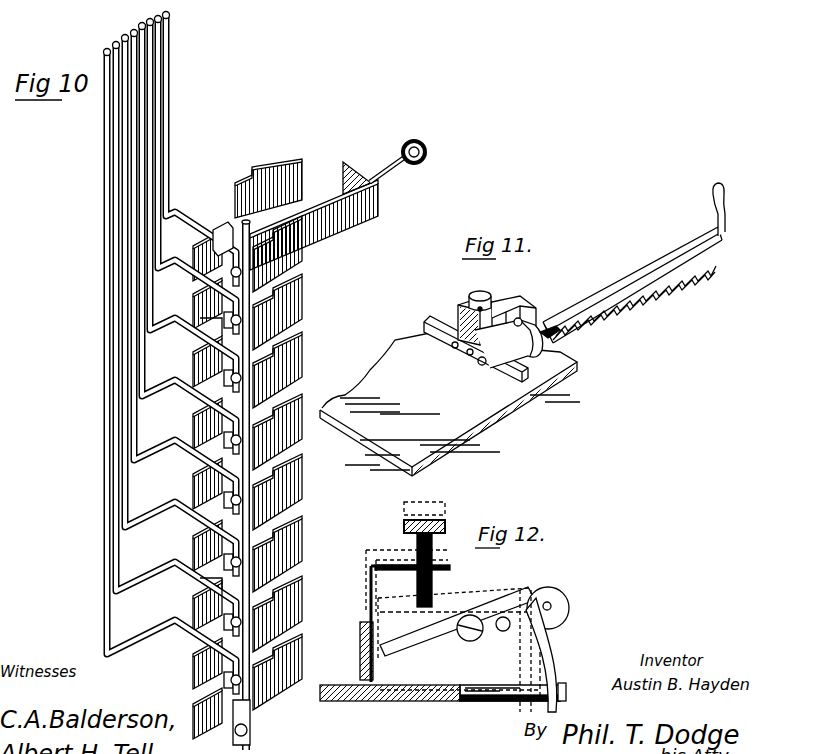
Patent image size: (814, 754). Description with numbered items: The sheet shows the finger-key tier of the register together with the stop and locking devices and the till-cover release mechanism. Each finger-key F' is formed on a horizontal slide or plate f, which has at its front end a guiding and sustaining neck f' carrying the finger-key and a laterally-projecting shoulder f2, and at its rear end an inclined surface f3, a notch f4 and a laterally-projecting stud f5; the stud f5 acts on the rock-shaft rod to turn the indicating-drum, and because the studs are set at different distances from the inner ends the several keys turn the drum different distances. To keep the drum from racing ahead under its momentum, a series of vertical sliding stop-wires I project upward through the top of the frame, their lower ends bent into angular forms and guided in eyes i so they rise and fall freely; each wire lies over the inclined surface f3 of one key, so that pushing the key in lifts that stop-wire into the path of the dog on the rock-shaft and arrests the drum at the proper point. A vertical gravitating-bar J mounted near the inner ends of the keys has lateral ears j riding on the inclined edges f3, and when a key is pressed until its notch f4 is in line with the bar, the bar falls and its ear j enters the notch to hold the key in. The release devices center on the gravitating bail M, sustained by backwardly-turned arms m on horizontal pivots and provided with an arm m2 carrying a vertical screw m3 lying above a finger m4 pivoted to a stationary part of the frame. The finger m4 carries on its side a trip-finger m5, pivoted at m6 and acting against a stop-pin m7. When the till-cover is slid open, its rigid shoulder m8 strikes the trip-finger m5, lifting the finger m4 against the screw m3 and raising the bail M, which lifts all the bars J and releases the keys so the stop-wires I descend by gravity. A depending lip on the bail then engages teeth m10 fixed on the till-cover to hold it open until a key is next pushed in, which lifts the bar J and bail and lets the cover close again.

In FIG. 10, the vertical sliding stop-wires I is at (126, 33).
In FIG. 10, the vertical gravitating-bar J is at (248, 706).
In FIG. 10, the lateral ear j is at (215, 222).
In FIG. 10, the eye i is at (233, 324).
In FIG. 10, the horizontal slide or plate f is at (281, 434).
In FIG. 10, the guiding and sustaining neck f' is at (387, 175).
In FIG. 10, the laterally-projecting shoulder f2 is at (347, 165).
In FIG. 10, the inclined surface f3 is at (240, 212).
In FIG. 10, the notch f4 is at (277, 183).
In FIG. 10, the laterally-projecting stud f5 is at (260, 200).
In FIG. 10, the finger-key F' is at (425, 152).
In FIG. 11, the base plate C is at (562, 364).
In FIG. 12, the base plate C is at (416, 700).
In FIG. 11, the bail M is at (444, 318).
In FIG. 12, the bail M is at (360, 648).
In FIG. 11, the backwardly-turned arm m is at (484, 366).
In FIG. 11, the arm m2 is at (490, 297).
In FIG. 12, the arm m2 is at (452, 568).
In FIG. 11, the vertical screw m3 is at (494, 300).
In FIG. 12, the vertical screw m3 is at (447, 526).
In FIG. 11, the finger m4 is at (470, 352).
In FIG. 12, the finger m4 is at (473, 643).
In FIG. 11, the trip-finger m5 is at (538, 328).
In FIG. 12, the trip-finger m5 is at (556, 645).
In FIG. 11, the pivot m6 is at (522, 313).
In FIG. 12, the pivot m6 is at (468, 642).
In FIG. 11, the stop-pin m7 is at (523, 320).
In FIG. 12, the stop-pin m7 is at (504, 632).
In FIG. 11, the rigid shoulder m8 is at (548, 328).
In FIG. 11, the teeth m10 is at (652, 275).